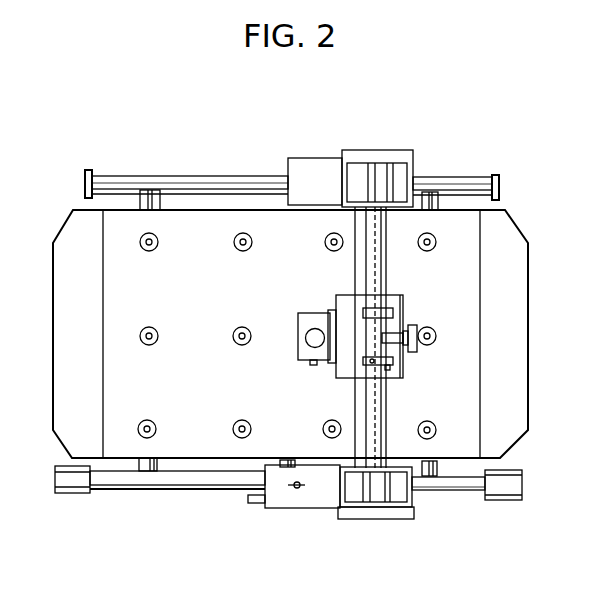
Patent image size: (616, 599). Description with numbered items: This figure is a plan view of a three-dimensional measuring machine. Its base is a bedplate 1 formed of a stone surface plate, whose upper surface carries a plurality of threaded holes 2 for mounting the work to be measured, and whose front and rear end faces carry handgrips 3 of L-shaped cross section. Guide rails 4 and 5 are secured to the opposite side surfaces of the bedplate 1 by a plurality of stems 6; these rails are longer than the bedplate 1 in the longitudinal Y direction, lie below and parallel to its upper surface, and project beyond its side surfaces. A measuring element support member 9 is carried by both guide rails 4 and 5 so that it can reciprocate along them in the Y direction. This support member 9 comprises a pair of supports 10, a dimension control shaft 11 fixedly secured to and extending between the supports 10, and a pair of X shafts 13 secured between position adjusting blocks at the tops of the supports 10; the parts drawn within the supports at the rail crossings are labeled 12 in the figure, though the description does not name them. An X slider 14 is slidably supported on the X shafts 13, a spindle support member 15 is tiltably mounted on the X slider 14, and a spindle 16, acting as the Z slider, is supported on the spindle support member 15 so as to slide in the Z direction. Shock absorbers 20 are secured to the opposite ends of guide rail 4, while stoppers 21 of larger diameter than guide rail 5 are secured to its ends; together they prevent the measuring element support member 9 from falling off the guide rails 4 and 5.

The bedplate 1 is at (193, 226).
The threaded holes 2 is at (158, 245).
The handgrips 3 is at (529, 270).
The guide rail 4 is at (137, 486).
The guide rail 5 is at (137, 183).
The stems 6 is at (160, 466).
The measuring element support member 9 is at (360, 528).
The supports 10 is at (404, 156).
The dimension control shaft 11 is at (388, 221).
The slide guide 12 is at (381, 170).
The X shafts 13 is at (363, 267).
The X slider 14 is at (404, 370).
The spindle support member 15 is at (297, 326).
The spindle 16 is at (305, 342).
The shock absorbers 20 is at (63, 495).
The stoppers 21 is at (83, 187).